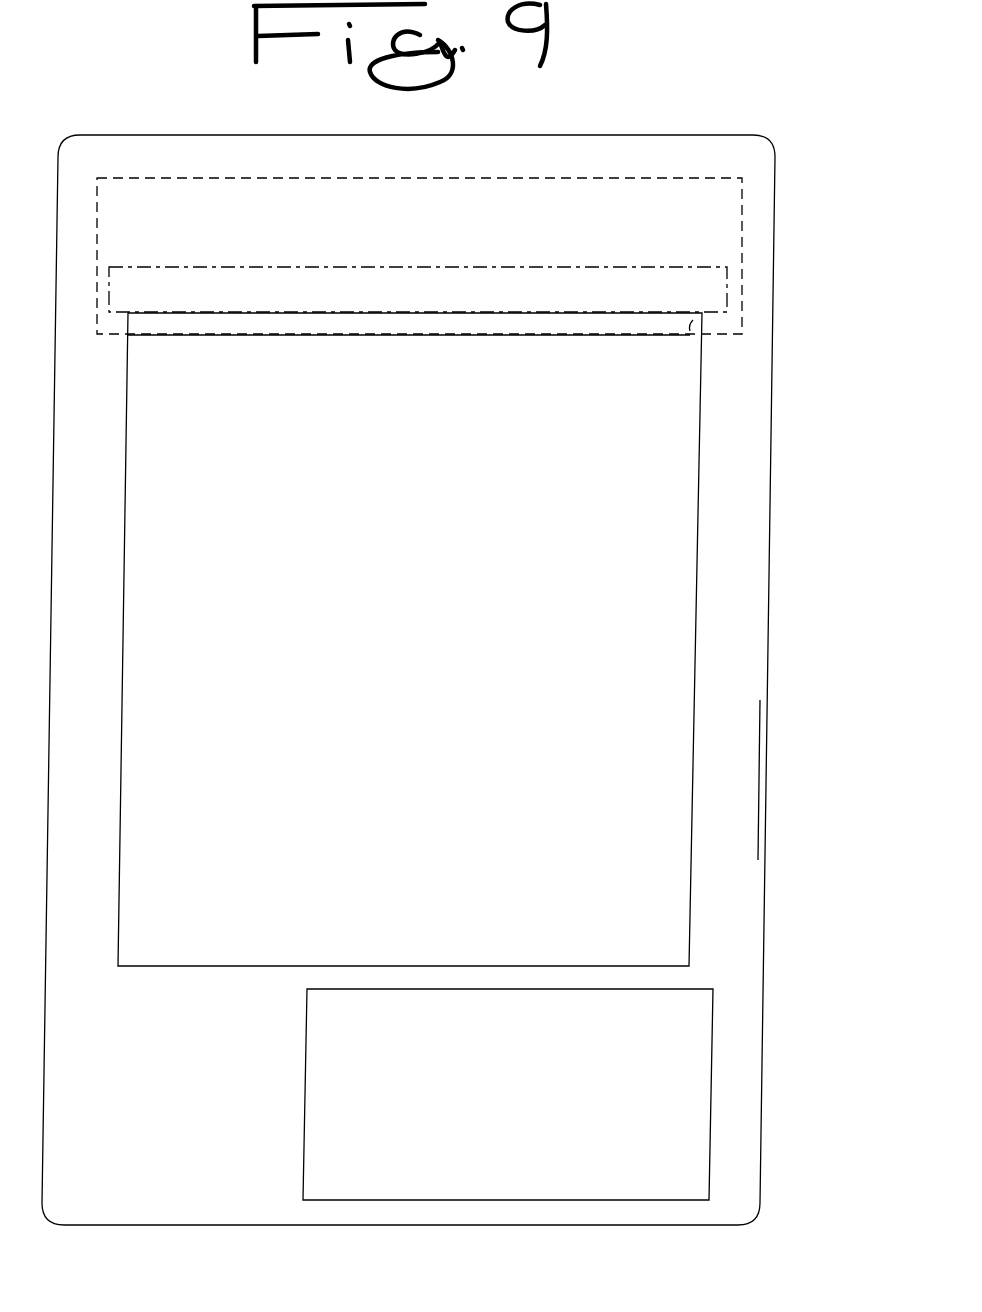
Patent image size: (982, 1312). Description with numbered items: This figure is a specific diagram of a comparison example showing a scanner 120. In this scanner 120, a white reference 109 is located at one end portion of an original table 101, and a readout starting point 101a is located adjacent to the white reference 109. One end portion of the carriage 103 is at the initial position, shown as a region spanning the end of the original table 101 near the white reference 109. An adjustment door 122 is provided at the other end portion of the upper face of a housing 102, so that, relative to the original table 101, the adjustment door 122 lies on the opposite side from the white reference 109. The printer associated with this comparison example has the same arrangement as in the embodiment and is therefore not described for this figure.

The original table 101 is at (665, 603).
The readout starting point 101a is at (735, 334).
The housing 102 is at (740, 771).
The carriage 103 is at (712, 230).
The white reference 109 is at (712, 300).
The scanner 120 is at (765, 845).
The adjustment door 122 is at (695, 1068).